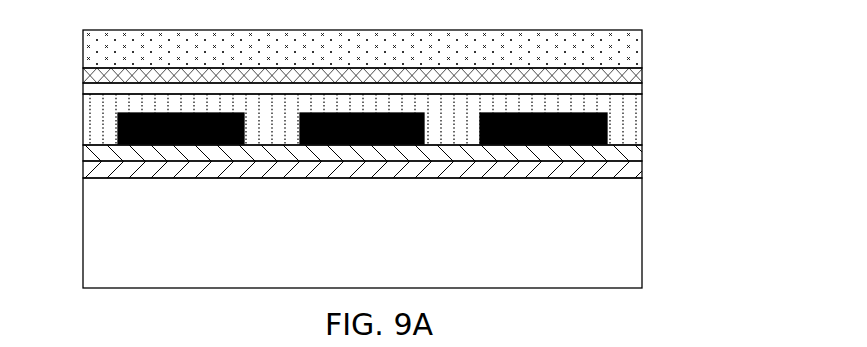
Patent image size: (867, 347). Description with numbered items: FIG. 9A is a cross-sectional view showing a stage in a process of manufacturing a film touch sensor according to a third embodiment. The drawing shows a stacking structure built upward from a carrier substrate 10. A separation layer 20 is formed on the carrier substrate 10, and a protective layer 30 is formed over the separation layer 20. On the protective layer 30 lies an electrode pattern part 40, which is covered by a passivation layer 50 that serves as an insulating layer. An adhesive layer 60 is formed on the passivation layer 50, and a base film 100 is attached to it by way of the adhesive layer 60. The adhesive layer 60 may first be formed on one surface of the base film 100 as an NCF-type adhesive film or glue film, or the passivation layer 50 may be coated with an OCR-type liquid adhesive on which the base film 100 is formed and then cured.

The carrier substrate 10 is at (643, 234).
The separation layer 20 is at (643, 170).
The protective layer 30 is at (83, 150).
The electrode pattern part 40 is at (679, 100).
The passivation layer 50 is at (643, 88).
The adhesive layer 60 is at (643, 73).
The base film 100 is at (643, 42).